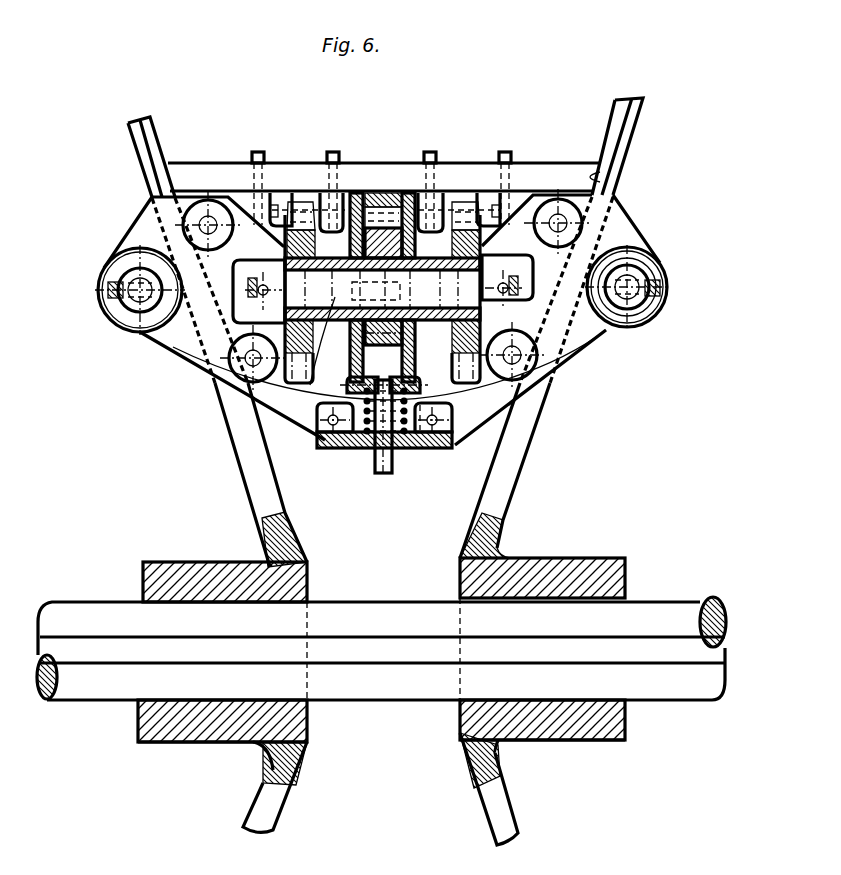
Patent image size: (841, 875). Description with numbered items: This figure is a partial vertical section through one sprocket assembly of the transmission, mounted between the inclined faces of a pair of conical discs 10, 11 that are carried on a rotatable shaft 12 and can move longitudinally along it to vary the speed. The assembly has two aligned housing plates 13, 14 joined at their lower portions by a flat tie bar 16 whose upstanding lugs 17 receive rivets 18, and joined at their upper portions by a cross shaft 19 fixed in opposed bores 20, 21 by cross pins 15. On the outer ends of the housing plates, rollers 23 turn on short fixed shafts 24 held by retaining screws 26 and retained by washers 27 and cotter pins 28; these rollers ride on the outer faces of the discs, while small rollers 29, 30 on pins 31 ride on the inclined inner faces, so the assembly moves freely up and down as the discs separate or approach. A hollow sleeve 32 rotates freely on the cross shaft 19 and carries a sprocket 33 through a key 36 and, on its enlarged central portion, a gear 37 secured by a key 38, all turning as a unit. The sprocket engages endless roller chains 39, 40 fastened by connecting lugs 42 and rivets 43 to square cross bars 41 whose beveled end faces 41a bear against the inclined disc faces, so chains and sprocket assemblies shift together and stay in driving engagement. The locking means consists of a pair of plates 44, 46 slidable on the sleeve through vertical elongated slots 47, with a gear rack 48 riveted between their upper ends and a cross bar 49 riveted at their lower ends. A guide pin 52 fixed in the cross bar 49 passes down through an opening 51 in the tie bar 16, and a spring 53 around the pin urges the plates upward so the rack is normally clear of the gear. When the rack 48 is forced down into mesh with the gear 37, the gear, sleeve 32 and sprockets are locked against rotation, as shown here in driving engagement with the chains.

The conical disc 10 is at (137, 138).
The conical disc 11 is at (630, 133).
The rotatable shaft 12 is at (712, 692).
The housing plate 13 is at (132, 222).
The housing plate 14 is at (618, 215).
The cross pin 15 is at (215, 372).
The tie bar 16 is at (342, 452).
The upstanding lug 17 is at (428, 452).
The rivet 18 is at (436, 440).
The cross shaft 19 is at (240, 255).
The bore 20 is at (273, 252).
The bore 21 is at (507, 287).
The roller 23 is at (122, 323).
The short fixed shaft 24 is at (123, 280).
The retaining screw 26 is at (110, 287).
The washer 27 is at (140, 278).
The cotter pin 28 is at (660, 317).
The small roller 29 is at (208, 263).
The small roller 30 is at (237, 370).
The pin 31 is at (209, 222).
The sleeve 32 is at (382, 288).
The sprocket 33 is at (345, 392).
The key 36 is at (500, 327).
The gear 37 is at (395, 378).
The key 38 is at (408, 347).
The roller chain 39 is at (297, 200).
The roller chain 40 is at (470, 210).
The cross bar 41 is at (392, 170).
The beveled end face 41a is at (590, 178).
The connecting lug 42 is at (513, 195).
The rivet 43 is at (505, 157).
The plate 44 is at (330, 165).
The plate 46 is at (437, 205).
The vertical elongated slot 47 is at (405, 247).
The gear rack 48 is at (372, 228).
The cross bar 49 is at (337, 448).
The opening 51 is at (383, 448).
The guide pin 52 is at (383, 473).
The spring 53 is at (407, 449).